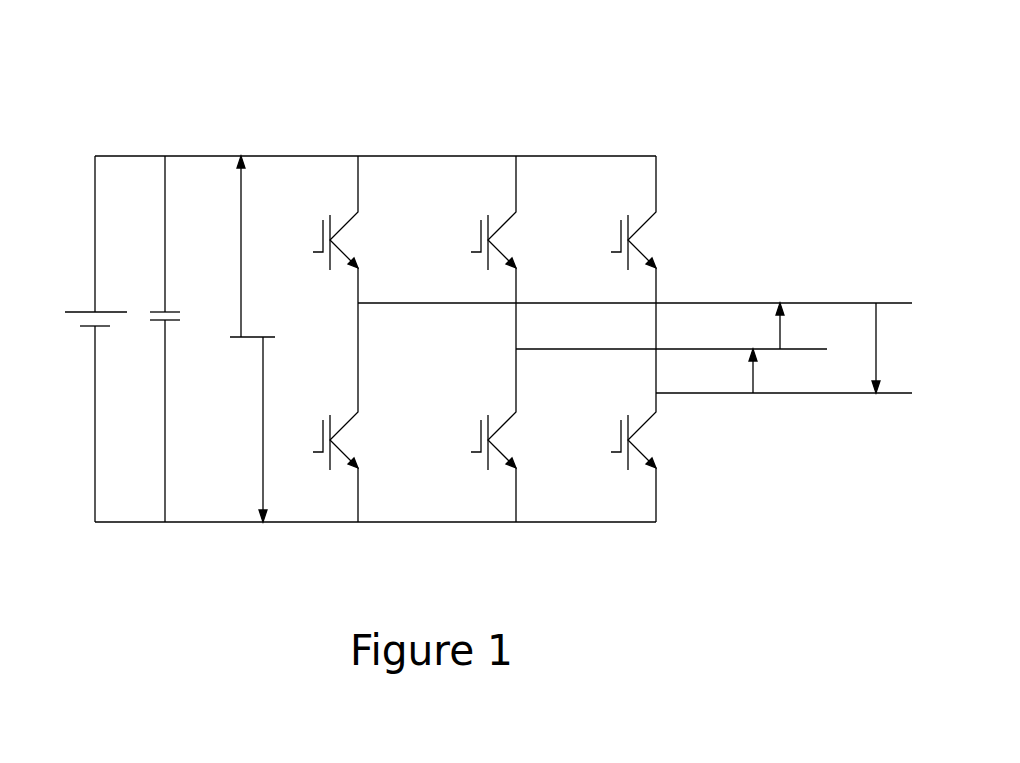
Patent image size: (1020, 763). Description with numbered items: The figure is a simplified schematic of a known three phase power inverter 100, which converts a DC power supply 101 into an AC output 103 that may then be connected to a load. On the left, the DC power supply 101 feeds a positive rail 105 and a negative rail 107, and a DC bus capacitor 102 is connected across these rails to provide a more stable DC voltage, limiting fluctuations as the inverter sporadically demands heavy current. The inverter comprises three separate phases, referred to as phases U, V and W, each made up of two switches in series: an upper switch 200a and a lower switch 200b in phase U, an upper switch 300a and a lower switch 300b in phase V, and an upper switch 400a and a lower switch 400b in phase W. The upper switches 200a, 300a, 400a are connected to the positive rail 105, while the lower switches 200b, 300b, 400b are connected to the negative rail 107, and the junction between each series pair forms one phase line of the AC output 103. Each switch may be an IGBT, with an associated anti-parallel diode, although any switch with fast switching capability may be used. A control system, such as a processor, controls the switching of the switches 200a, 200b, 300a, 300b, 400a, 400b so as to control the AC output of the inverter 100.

The three phase power inverter 100 is at (177, 130).
The DC power supply 101 is at (80, 343).
The DC bus capacitor 102 is at (165, 325).
The AC output 103 is at (798, 421).
The positive rail 105 is at (122, 157).
The negative rail 107 is at (208, 522).
The upper switch of phase U 200a is at (268, 120).
The lower switch of phase U 200b is at (375, 438).
The upper switch of phase V 300a is at (528, 223).
The lower switch of phase V 300b is at (528, 458).
The upper switch of phase W 400a is at (670, 233).
The lower switch of phase W 400b is at (655, 435).